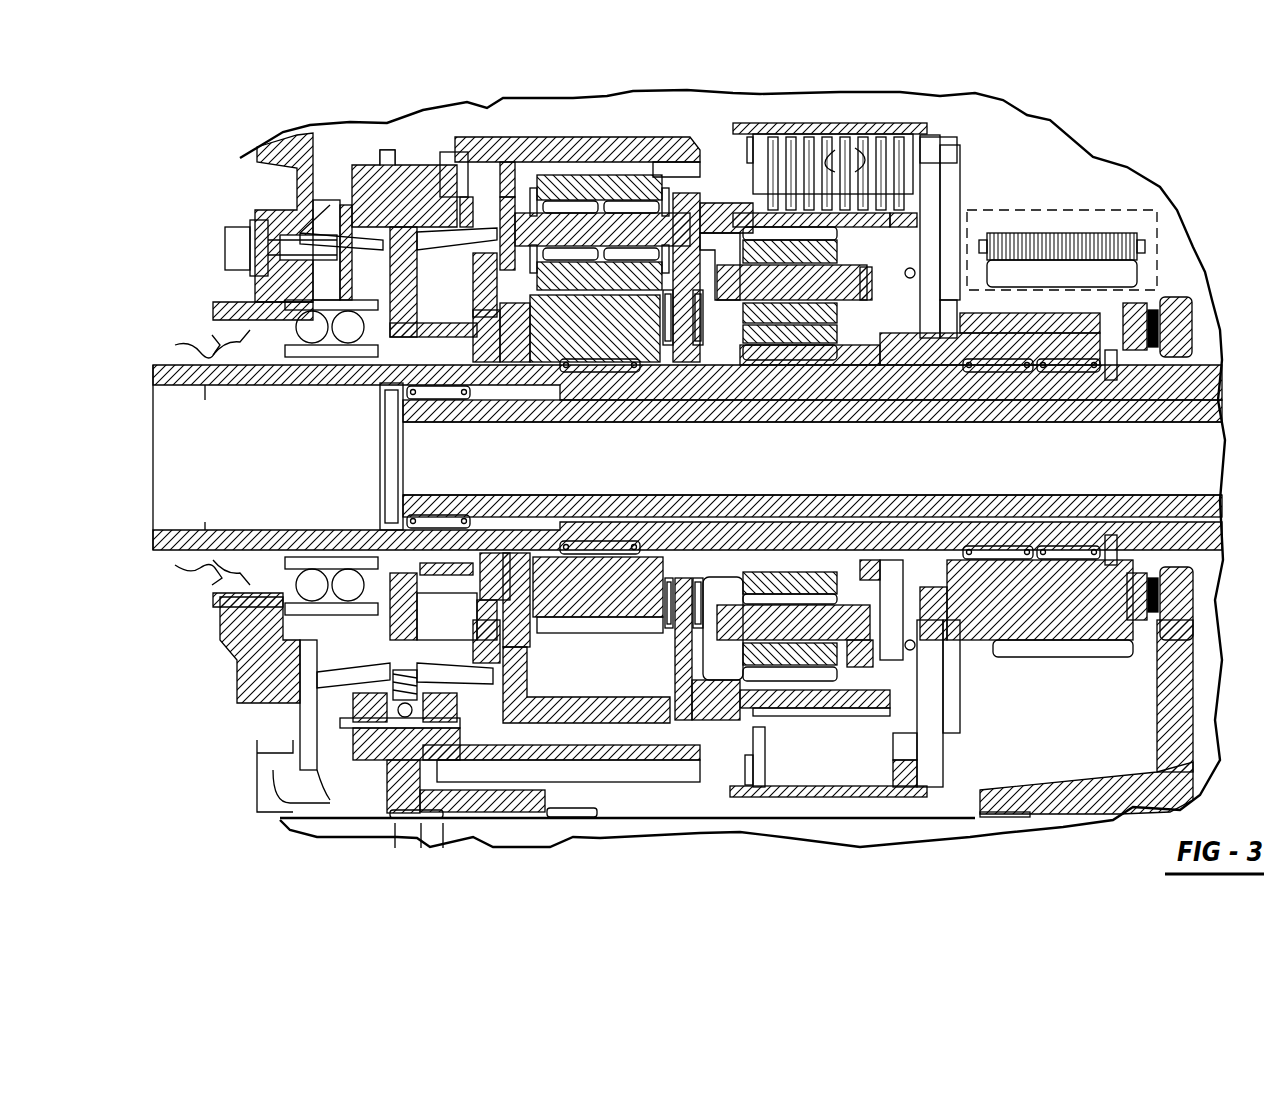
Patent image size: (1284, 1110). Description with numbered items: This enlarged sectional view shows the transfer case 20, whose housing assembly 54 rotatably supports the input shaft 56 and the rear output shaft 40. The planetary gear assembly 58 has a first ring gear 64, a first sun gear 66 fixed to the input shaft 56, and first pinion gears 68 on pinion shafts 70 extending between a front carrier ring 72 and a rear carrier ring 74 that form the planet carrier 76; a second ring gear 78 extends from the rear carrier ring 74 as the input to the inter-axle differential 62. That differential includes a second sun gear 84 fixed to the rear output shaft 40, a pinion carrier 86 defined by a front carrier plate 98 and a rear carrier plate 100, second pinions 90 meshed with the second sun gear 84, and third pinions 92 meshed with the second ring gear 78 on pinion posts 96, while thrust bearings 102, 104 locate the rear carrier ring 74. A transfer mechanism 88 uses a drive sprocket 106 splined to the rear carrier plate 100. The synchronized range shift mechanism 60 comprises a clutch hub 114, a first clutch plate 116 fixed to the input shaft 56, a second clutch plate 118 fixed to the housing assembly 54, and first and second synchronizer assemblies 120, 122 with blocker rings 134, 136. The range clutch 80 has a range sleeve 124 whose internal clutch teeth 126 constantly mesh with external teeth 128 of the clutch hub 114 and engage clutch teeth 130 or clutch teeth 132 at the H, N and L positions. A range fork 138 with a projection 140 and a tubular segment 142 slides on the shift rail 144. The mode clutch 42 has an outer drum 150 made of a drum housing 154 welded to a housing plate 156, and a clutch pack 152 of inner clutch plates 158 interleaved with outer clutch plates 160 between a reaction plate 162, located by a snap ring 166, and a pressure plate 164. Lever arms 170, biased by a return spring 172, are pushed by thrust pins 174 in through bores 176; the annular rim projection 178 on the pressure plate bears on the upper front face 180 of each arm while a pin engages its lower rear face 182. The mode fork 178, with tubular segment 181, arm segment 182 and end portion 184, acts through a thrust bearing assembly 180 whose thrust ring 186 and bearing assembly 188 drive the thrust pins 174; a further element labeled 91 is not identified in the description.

The transfer case 20 is at (1160, 145).
The rear output shaft 40 is at (542, 410).
The mode clutch 42 is at (962, 113).
The housing assembly 54 is at (279, 143).
The input shaft 56 is at (184, 360).
The planetary gear assembly 58 is at (562, 100).
The synchronized range shift mechanism 60 is at (315, 127).
The inter-axle differential 62 is at (732, 355).
The first ring gear 64 is at (642, 135).
The first sun gear 66 is at (602, 332).
The first pinion gears 68 is at (608, 194).
The pinion shaft 70 is at (608, 236).
The front carrier ring 72 is at (557, 170).
The rear carrier ring 74 is at (672, 657).
The planet carrier 76 is at (557, 687).
The second ring gear 78 is at (725, 227).
The range clutch 80 is at (257, 775).
The second sun gear 84 is at (775, 343).
The pinion carrier 86 is at (859, 263).
The transfer mechanism 88 is at (1177, 257).
The second pinions 90 is at (775, 580).
The hub 91 is at (805, 631).
The third pinions 92 is at (798, 258).
The pinion post 96 is at (805, 288).
The front carrier plate 98 is at (712, 255).
The rear carrier plate 100 is at (877, 645).
The thrust bearing 102 is at (665, 550).
The thrust bearing 104 is at (697, 555).
The drive sprocket 106 is at (1047, 610).
The clutch hub 114 is at (434, 263).
The first clutch plate 116 is at (473, 303).
The second clutch plate 118 is at (317, 196).
The first synchronizer assembly 120 is at (445, 650).
The second synchronizer assembly 122 is at (347, 650).
The range sleeve 124 is at (369, 180).
The internal clutch teeth 126 is at (437, 147).
The external teeth 128 is at (322, 725).
The clutch teeth 130 is at (514, 195).
The clutch teeth 132 is at (267, 207).
The blocker ring 134 is at (449, 193).
The blocker ring 136 is at (228, 242).
The range fork 138 is at (489, 807).
The projection 140 is at (392, 773).
The tubular segment 142 is at (602, 790).
The shift rail 144 is at (312, 832).
The outer drum 150 is at (747, 130).
The clutch pack 152 is at (825, 143).
The drum housing 154 is at (882, 115).
The housing plate 156 is at (957, 180).
The inner clutch plates 158 is at (890, 191).
The outer clutch plates 160 is at (792, 130).
The reaction plate 162 is at (762, 735).
The pressure plate 164 is at (947, 140).
The snap ring 166 is at (745, 150).
The lever arms 170 is at (982, 235).
The return spring 172 is at (902, 275).
The thrust pins 174 is at (1012, 313).
The through bores 176 is at (1027, 362).
The mode fork 178 is at (962, 167).
The thrust bearing assembly 180 is at (902, 170).
The tubular segment 181 is at (1002, 785).
The arm segment 182 is at (947, 362).
The end portion 184 is at (1187, 295).
The thrust ring 186 is at (1192, 362).
The bearing assembly 188 is at (1192, 340).